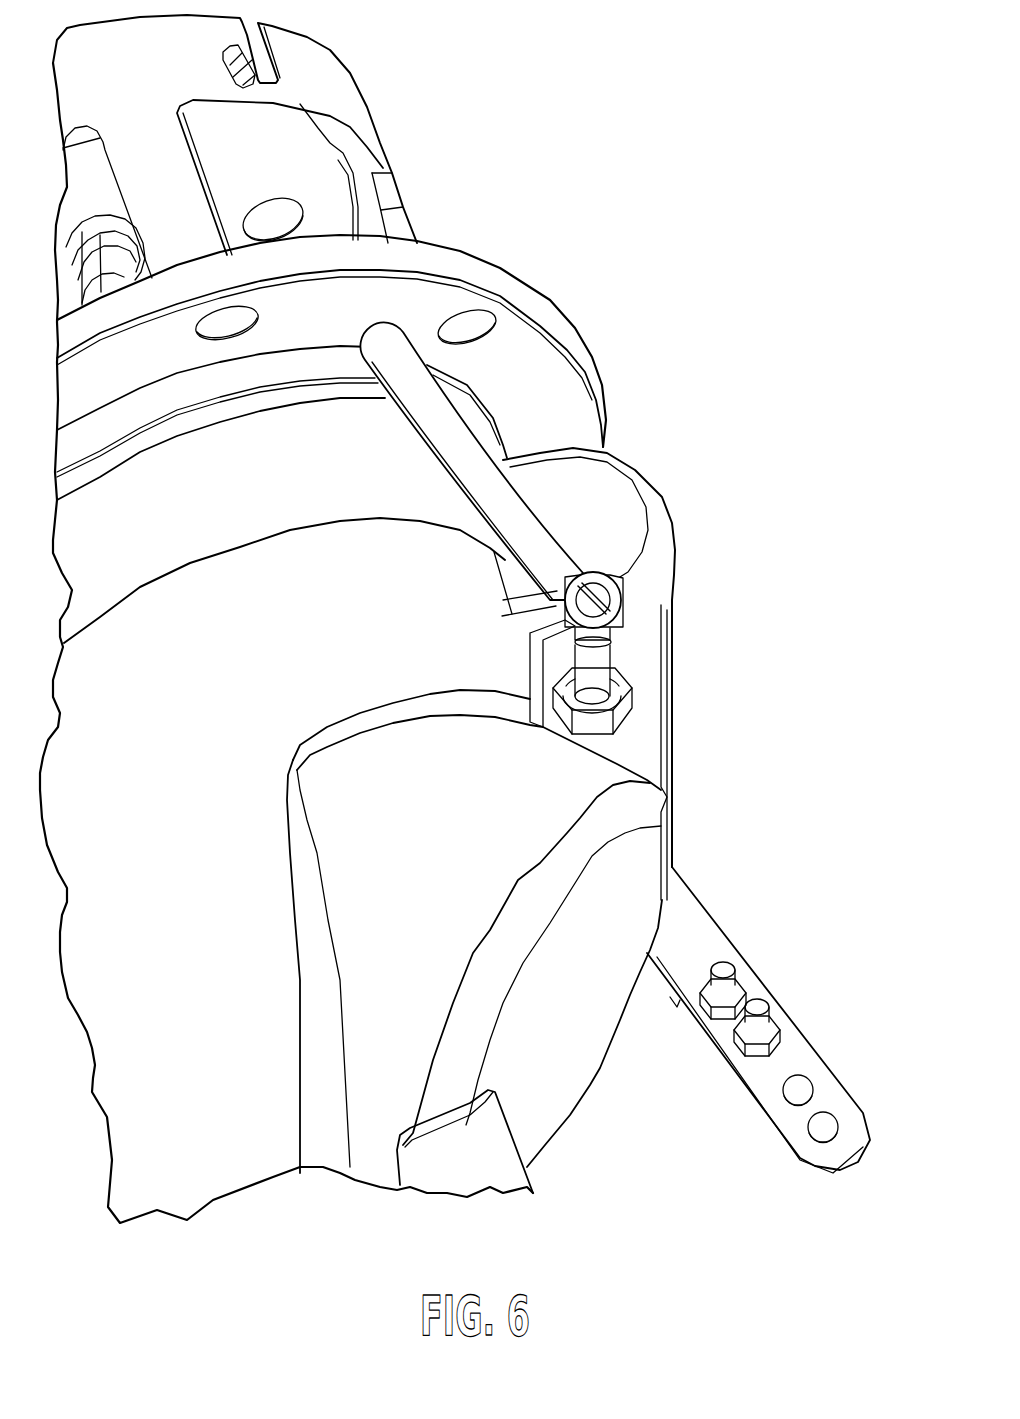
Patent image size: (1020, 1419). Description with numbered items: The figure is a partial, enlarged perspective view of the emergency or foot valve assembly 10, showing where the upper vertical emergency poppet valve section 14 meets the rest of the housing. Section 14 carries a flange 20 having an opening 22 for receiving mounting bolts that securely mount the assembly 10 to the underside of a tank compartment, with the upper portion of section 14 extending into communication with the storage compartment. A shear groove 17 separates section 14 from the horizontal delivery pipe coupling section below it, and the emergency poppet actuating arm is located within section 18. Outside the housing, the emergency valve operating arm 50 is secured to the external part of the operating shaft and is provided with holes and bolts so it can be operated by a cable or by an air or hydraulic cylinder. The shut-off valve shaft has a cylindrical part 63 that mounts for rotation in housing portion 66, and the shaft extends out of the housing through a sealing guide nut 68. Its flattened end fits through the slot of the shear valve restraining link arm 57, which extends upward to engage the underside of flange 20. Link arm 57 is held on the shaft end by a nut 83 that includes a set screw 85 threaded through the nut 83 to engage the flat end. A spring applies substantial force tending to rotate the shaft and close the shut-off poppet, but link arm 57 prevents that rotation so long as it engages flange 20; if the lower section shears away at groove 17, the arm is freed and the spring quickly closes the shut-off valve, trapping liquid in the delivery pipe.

The emergency or foot valve assembly 10 is at (464, 619).
The upper vertical emergency poppet valve section 14 is at (402, 227).
The shear groove 17 is at (187, 393).
The section 18 is at (249, 751).
The flange 20 is at (365, 322).
The opening 22 is at (472, 320).
The emergency valve operating arm 50 is at (798, 1062).
The shear valve restraining link arm 57 is at (407, 383).
The cylindrical part of shaft 63 is at (615, 650).
The housing portion 66 is at (650, 730).
The sealing guide nut 68 is at (615, 700).
The nut 83 is at (615, 590).
The set screw 85 is at (497, 612).